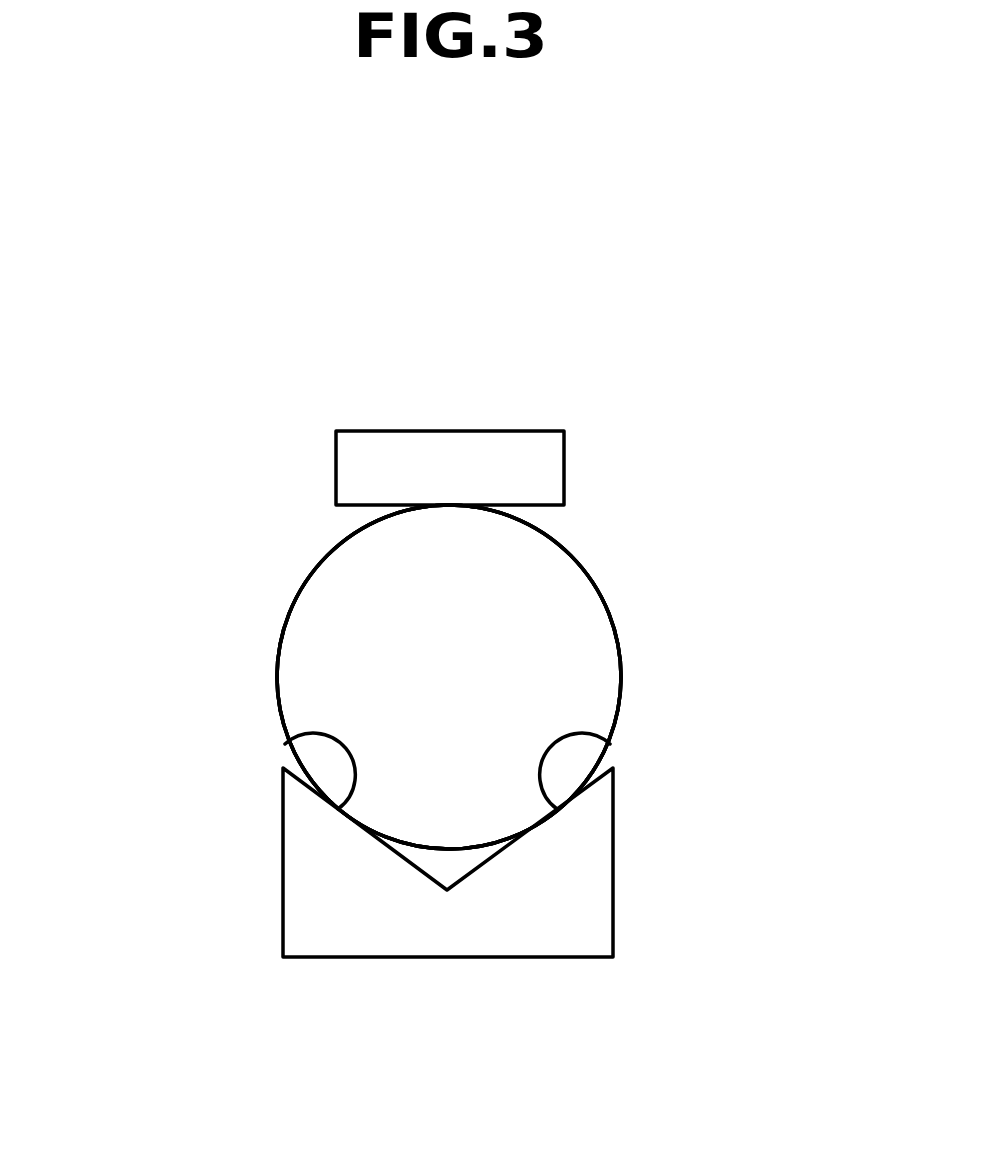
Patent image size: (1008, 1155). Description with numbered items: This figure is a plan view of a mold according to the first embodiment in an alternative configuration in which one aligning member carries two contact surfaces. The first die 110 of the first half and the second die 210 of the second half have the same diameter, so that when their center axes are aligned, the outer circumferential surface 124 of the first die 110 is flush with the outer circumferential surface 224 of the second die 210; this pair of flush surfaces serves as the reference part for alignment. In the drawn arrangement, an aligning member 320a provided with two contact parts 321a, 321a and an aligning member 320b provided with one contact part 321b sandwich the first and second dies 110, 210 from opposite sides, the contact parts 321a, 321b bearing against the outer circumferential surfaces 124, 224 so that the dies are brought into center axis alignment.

The first die 110 is at (570, 617).
The second die 210 is at (581, 677).
The outer circumferential surface 124 is at (277, 672).
The outer circumferential surface 224 is at (329, 677).
The aligning member 320a is at (592, 877).
The aligning member 320b is at (493, 450).
The contact part 321a is at (297, 737).
The contact part 321b is at (452, 507).